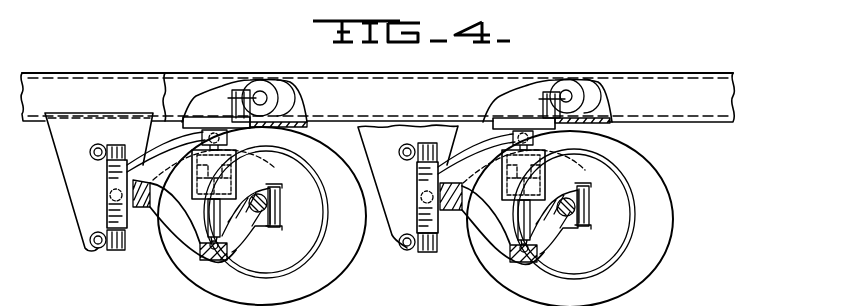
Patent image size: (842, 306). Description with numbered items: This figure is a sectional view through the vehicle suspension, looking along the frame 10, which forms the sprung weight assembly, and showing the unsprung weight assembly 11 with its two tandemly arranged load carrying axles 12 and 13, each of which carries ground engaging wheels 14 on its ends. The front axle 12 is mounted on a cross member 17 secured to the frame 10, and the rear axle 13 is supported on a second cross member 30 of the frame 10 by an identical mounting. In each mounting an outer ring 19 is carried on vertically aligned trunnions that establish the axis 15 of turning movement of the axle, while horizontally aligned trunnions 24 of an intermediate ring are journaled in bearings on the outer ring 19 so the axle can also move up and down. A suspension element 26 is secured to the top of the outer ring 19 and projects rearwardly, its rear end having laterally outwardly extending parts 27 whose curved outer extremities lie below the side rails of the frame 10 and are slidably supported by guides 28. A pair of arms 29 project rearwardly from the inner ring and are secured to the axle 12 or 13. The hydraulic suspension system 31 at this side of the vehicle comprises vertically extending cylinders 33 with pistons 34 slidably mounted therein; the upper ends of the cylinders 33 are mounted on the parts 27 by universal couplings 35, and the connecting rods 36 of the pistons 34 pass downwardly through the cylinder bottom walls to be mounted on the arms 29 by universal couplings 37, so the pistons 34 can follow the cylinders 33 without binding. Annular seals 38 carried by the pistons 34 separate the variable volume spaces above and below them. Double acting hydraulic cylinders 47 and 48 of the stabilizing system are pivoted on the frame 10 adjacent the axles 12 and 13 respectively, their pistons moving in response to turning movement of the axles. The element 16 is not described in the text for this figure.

The frame 10 is at (694, 88).
The unsprung weight assembly 11 is at (357, 264).
The front axle 12 is at (282, 205).
The axle 13 is at (590, 210).
The ground engaging wheels 14 is at (322, 278).
The axis 15 is at (122, 148).
The rear suspension unit 16 is at (430, 250).
The cross member 17 is at (90, 151).
The outer ring 19 is at (112, 178).
The trunnions 24 is at (110, 199).
The suspension element 26 is at (172, 158).
The laterally outwardly extending parts 27 is at (188, 106).
The guides 28 is at (228, 114).
The arms 29 is at (186, 240).
The second cross member 30 is at (399, 152).
The hydraulic suspension system 31 is at (554, 210).
The cylinders 33 is at (237, 158).
The pistons 34 is at (192, 165).
The universal couplings 35 is at (284, 136).
The connecting rods 36 is at (246, 245).
The universal couplings 37 is at (215, 258).
The annular seals 38 is at (268, 167).
The double acting hydraulic cylinder 47 is at (287, 94).
The double acting hydraulic cylinder 48 is at (602, 96).